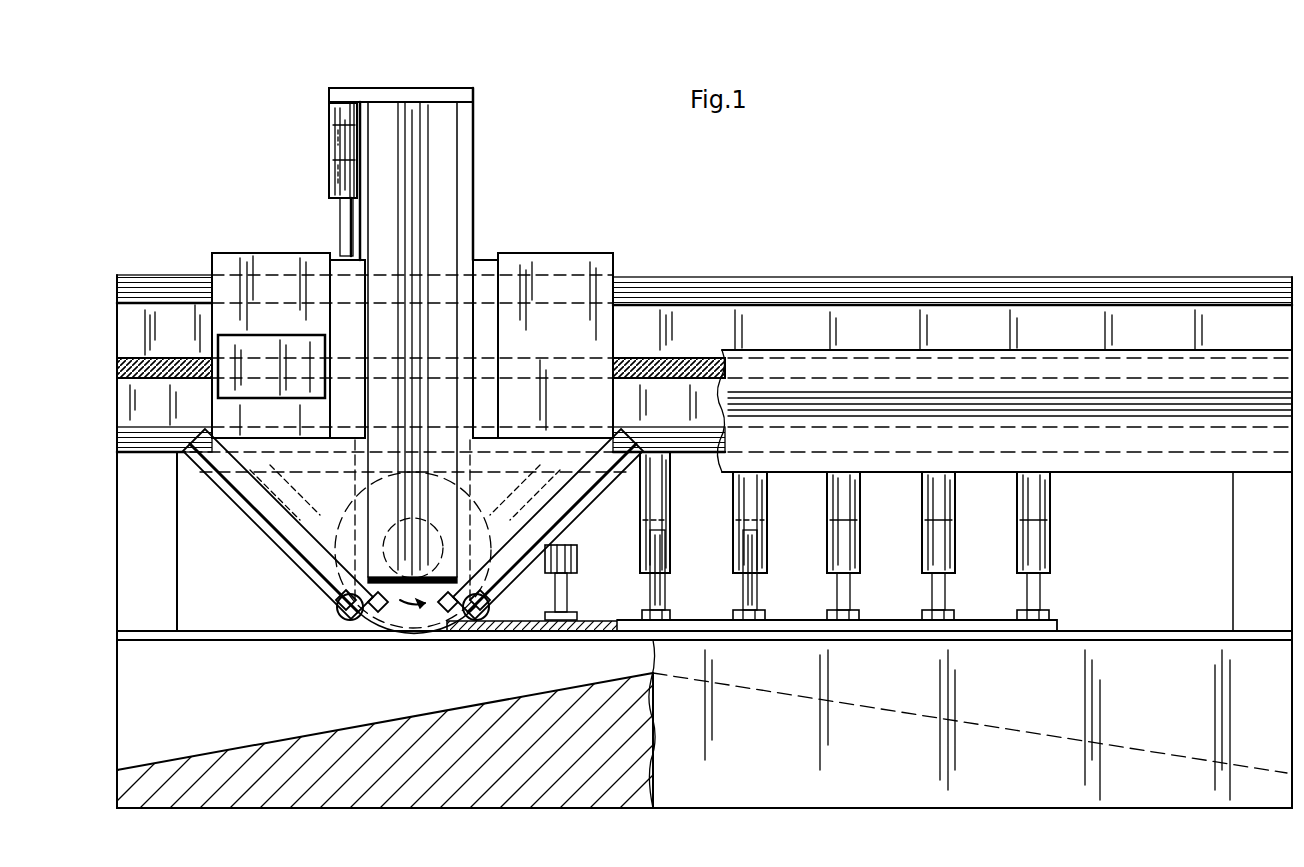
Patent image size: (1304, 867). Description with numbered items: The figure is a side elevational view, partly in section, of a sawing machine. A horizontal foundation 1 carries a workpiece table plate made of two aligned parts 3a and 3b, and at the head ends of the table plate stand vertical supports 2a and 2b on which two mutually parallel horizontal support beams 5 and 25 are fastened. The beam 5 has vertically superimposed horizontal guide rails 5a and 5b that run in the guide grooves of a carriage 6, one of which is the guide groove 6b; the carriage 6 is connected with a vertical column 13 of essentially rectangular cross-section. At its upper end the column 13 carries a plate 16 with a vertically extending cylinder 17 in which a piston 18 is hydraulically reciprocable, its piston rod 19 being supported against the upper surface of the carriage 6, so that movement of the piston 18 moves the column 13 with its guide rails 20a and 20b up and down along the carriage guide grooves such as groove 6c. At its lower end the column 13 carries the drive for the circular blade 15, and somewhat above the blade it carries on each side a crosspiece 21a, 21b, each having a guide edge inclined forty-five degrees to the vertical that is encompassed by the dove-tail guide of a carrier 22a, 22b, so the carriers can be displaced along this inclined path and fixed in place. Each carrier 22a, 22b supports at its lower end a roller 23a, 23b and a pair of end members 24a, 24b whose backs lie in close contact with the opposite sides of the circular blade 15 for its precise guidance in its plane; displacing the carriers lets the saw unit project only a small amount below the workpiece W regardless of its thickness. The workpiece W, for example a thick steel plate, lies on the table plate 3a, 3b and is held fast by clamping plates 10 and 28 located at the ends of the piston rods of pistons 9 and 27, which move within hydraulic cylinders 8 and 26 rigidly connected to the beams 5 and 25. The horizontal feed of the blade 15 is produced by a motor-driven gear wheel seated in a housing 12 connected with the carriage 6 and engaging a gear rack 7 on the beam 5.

The horizontal foundation 1 is at (172, 768).
The vertical support 2a is at (130, 565).
The vertical support 2b is at (1243, 571).
The table plate part 3a is at (153, 632).
The table plate part 3b is at (1150, 640).
The horizontal support beam 5 is at (128, 332).
The horizontal guide rail 5a is at (155, 287).
The horizontal guide rail 5b is at (133, 437).
The carriage 6 is at (567, 285).
The guide groove 6b is at (483, 268).
The guide groove 6c is at (337, 268).
The gear rack 7 is at (118, 378).
The hydraulic cylinder 8 is at (660, 485).
The piston 9 is at (657, 528).
The clamping plate 10 is at (667, 612).
The housing 12 is at (243, 343).
The vertical column 13 is at (447, 207).
The circular blade 15 is at (410, 615).
The plate 16 is at (465, 94).
The cylinder 17 is at (340, 110).
The piston 18 is at (340, 128).
The piston rod 19 is at (340, 207).
The guide rail 20a is at (363, 197).
The guide rail 20b is at (463, 145).
The crosspiece 21a is at (295, 490).
The crosspiece 21b is at (533, 482).
The carrier 22a is at (283, 535).
The carrier 22b is at (545, 530).
The roller 23a is at (330, 613).
The roller 23b is at (490, 625).
The end members 24a is at (372, 613).
The end members 24b is at (448, 613).
The horizontal support beam 25 is at (1163, 462).
The hydraulic cylinder 26 is at (752, 503).
The piston 27 is at (750, 525).
The clamping plate 28 is at (760, 613).
The workpiece W is at (522, 620).